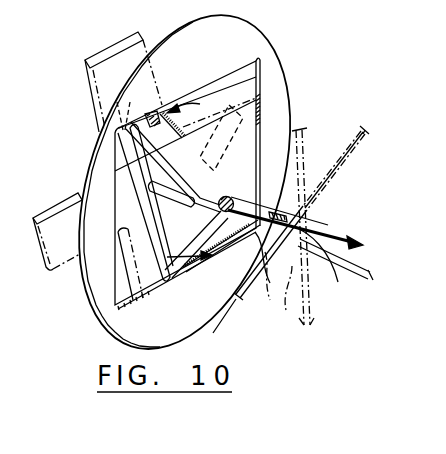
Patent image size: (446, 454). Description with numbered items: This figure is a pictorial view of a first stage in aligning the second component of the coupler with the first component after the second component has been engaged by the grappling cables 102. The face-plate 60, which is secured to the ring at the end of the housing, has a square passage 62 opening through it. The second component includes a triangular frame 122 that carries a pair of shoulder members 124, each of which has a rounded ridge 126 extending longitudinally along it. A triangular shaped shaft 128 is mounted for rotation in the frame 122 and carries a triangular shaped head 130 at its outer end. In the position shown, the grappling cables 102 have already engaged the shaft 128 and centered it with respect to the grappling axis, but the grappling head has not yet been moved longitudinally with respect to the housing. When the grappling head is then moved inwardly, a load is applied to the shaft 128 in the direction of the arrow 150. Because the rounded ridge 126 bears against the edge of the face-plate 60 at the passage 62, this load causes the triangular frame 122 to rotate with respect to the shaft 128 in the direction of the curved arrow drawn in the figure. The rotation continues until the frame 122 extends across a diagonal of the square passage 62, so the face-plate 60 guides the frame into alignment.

The face-plate 60 is at (232, 42).
The square passage 62 is at (262, 97).
The grappling cables 102 is at (275, 299).
The triangular frame 122 is at (201, 174).
The shoulder member 124 is at (142, 152).
The rounded ridge 126 is at (120, 175).
The triangular shaped shaft 128 is at (296, 208).
The triangular shaped head 130 is at (304, 243).
The arrow 150 is at (329, 226).